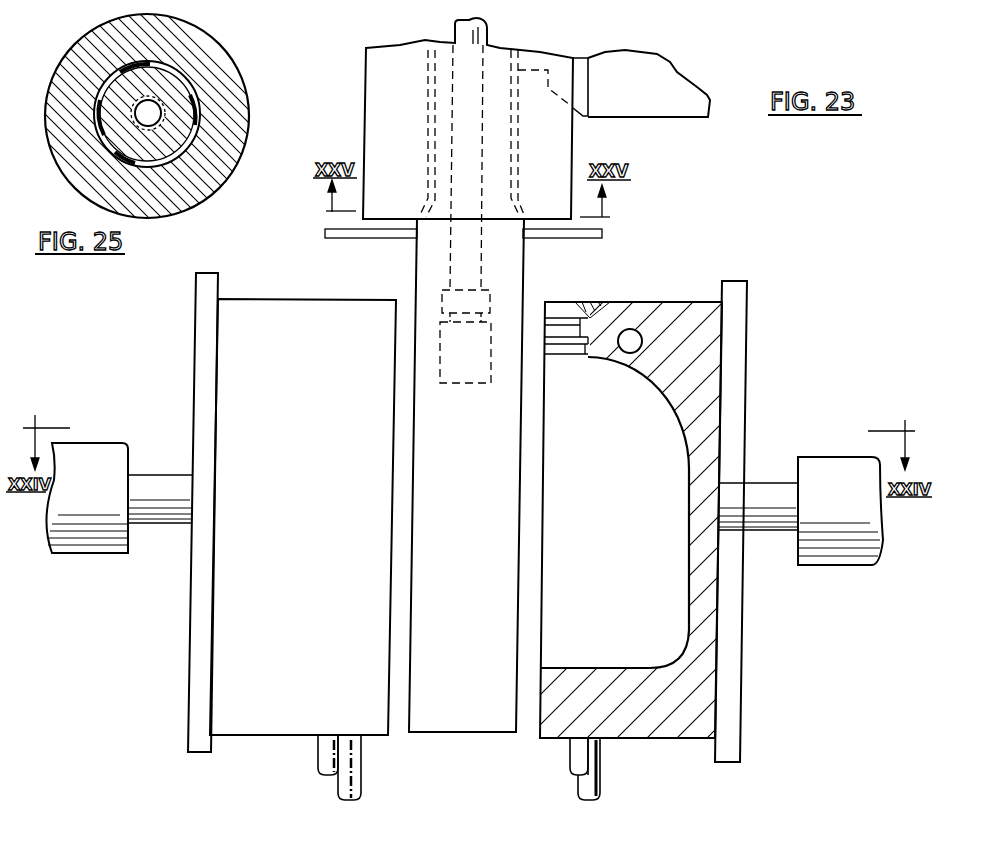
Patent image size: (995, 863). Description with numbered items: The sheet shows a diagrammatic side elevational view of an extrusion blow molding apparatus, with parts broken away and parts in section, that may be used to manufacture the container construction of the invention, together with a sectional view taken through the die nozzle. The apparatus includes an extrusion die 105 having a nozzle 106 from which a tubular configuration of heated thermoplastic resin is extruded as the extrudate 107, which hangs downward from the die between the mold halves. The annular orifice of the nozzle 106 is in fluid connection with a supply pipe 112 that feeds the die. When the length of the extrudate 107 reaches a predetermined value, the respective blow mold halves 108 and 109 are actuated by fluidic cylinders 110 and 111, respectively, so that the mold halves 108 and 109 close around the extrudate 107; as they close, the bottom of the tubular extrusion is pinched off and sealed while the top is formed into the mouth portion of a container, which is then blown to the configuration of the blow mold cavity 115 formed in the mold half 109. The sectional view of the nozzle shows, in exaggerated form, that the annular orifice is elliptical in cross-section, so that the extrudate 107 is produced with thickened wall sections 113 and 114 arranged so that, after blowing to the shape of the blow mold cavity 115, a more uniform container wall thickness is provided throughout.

In FIG. 23, the extrusion die 105 is at (395, 118).
In FIG. 23, the nozzle 106 is at (412, 234).
In FIG. 23, the extrudate 107 is at (477, 457).
In FIG. 23, the blow mold half 108 is at (312, 315).
In FIG. 23, the blow mold half 109 is at (520, 525).
In FIG. 23, the fluidic cylinder 110 is at (83, 528).
In FIG. 23, the fluidic cylinder 111 is at (848, 532).
In FIG. 23, the supply pipe 112 is at (663, 98).
In FIG. 25, the thickened wall section 113 is at (100, 132).
In FIG. 25, the thickened wall section 114 is at (205, 112).
In FIG. 23, the blow mold cavity 115 is at (672, 428).